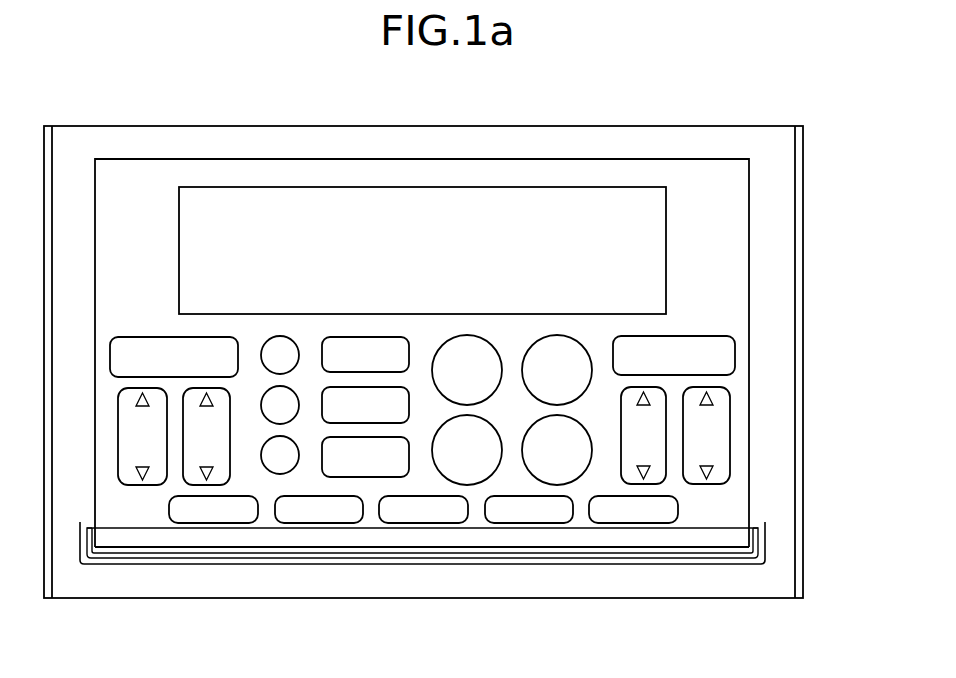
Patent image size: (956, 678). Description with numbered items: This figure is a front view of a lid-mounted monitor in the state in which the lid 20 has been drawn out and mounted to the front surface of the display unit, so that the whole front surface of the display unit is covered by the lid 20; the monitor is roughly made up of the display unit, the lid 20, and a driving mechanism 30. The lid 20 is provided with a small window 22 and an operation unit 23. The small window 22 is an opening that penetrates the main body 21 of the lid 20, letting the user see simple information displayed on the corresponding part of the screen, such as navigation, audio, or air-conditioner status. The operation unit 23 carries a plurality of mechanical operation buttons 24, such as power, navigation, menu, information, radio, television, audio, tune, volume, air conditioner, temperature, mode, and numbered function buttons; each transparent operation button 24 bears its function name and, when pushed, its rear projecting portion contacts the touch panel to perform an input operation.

The lid 20 is at (725, 273).
The main body 21 is at (712, 200).
The small window 22 is at (572, 200).
The operation unit 23 is at (558, 533).
The operation button 24 is at (297, 517).
The driving mechanism 30 is at (762, 540).